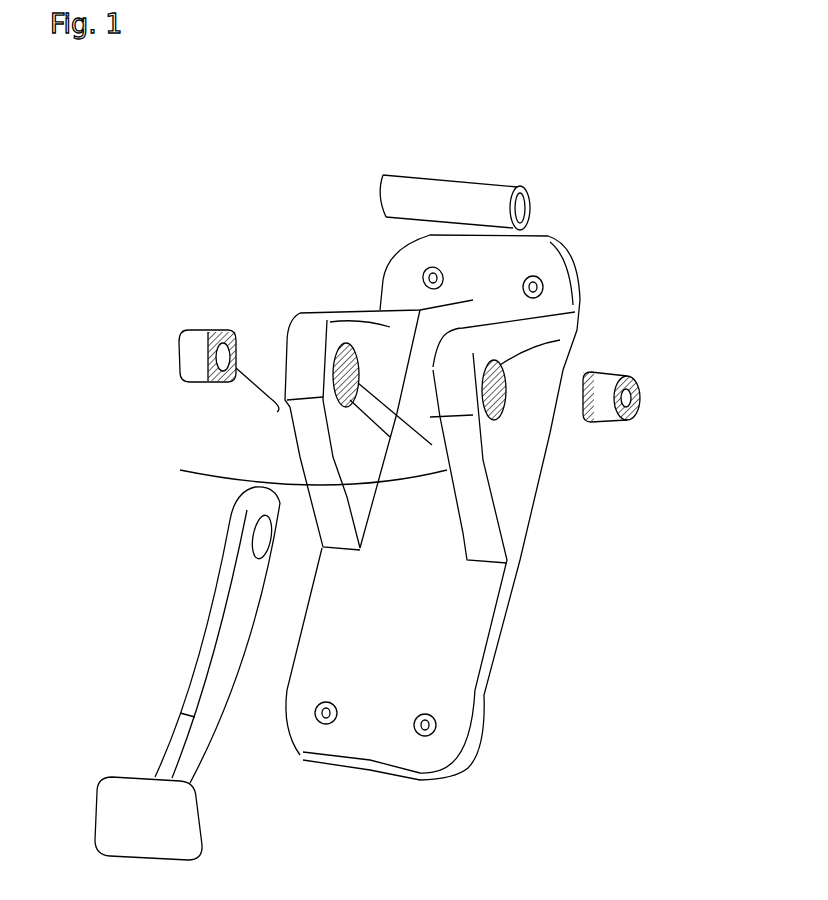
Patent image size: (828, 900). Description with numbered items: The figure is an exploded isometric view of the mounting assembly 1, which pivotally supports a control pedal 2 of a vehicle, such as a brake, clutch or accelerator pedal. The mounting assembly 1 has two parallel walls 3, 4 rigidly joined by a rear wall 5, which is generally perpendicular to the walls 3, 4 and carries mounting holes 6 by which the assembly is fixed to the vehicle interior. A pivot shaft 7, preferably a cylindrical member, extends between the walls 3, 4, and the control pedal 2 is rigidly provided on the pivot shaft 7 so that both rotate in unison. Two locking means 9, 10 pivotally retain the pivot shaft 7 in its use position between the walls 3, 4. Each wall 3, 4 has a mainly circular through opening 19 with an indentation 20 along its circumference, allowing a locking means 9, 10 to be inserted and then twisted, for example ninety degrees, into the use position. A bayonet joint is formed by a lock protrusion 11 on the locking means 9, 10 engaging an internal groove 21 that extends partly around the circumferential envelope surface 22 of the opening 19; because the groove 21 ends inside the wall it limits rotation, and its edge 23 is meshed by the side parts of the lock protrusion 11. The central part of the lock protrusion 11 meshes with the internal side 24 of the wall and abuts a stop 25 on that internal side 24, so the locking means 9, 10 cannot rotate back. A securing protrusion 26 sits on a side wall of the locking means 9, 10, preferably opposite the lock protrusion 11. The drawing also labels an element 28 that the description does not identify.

The mounting assembly 1 is at (120, 200).
The control pedal 2 is at (233, 620).
The wall 3 is at (373, 310).
The wall 4 is at (580, 293).
The rear wall 5 is at (490, 292).
The mounting holes 6 is at (387, 280).
The pivot shaft 7 is at (423, 200).
The locking means 9 is at (197, 355).
The locking means 10 is at (607, 424).
The lock protrusion 11 is at (277, 412).
The through opening 19 is at (487, 410).
The indentation 20 is at (490, 427).
The internal groove 21 is at (566, 362).
The circumferential envelope surface 22 is at (470, 387).
The edge 23 is at (490, 411).
The internal side 24 is at (354, 328).
The stop 25 is at (432, 445).
The securing protrusion 26 is at (597, 363).
The bearing bushing 28 is at (213, 340).